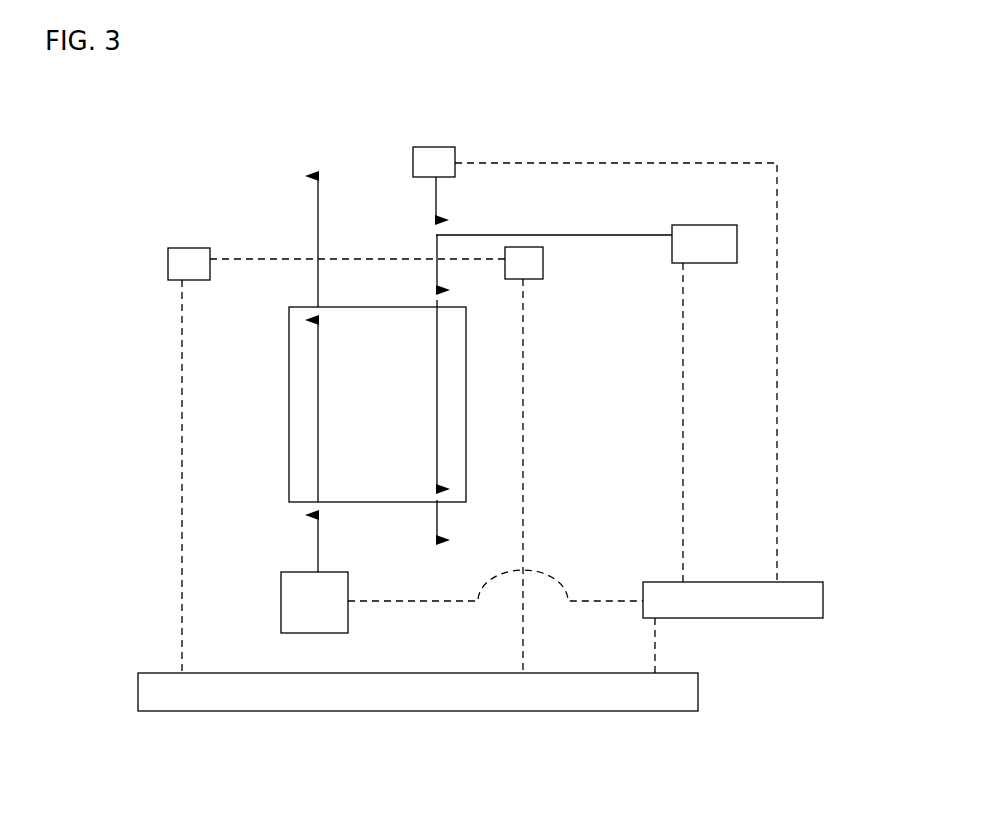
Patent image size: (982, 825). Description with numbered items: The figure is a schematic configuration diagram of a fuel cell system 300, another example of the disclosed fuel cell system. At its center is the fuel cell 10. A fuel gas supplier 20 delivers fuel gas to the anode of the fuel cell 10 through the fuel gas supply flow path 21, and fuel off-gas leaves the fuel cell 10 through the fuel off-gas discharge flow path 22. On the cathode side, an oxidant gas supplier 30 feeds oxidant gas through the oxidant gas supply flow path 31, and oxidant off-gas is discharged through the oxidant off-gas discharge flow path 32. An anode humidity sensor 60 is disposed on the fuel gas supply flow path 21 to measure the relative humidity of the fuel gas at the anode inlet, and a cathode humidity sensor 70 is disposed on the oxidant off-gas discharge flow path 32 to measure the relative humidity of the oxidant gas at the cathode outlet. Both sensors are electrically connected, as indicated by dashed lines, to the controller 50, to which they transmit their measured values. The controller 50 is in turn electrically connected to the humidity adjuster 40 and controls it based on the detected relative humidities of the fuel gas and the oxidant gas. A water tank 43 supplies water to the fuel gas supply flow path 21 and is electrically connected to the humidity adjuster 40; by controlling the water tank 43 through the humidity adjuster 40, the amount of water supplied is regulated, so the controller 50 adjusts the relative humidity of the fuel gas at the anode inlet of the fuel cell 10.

The fuel cell system 300 is at (789, 104).
The fuel cell 10 is at (289, 473).
The fuel gas supplier 20 is at (700, 264).
The fuel gas supply flow path 21 is at (598, 236).
The fuel off-gas discharge flow path 22 is at (437, 528).
The oxidant gas supplier 30 is at (281, 605).
The oxidant gas supply flow path 31 is at (316, 518).
The oxidant off-gas discharge flow path 32 is at (314, 280).
The humidity adjuster 40 is at (693, 619).
The water tank 43 is at (413, 176).
The controller 50 is at (698, 686).
The anode humidity sensor 60 is at (543, 268).
The cathode humidity sensor 70 is at (168, 256).